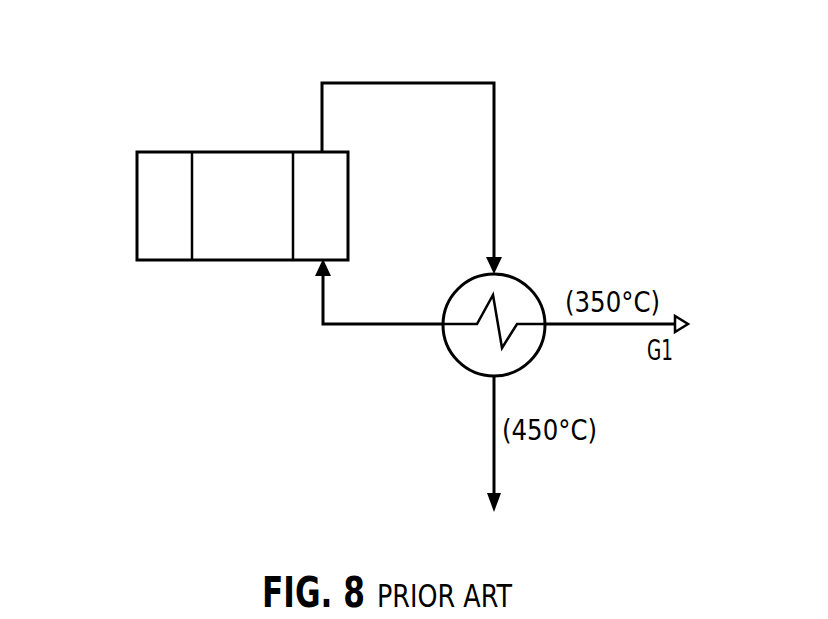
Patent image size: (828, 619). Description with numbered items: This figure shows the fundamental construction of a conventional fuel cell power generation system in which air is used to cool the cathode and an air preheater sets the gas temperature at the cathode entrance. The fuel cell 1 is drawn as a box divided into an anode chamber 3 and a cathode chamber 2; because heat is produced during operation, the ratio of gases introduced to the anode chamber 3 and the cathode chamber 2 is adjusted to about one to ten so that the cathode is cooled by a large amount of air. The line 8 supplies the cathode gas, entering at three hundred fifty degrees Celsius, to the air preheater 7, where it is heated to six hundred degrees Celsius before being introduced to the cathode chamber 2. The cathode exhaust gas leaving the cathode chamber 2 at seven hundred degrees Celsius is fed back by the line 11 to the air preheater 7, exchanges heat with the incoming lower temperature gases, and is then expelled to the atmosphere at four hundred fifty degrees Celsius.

The fuel cell 1 is at (214, 143).
The cathode chamber 2 is at (312, 157).
The anode chamber 3 is at (155, 203).
The air preheater 7 is at (531, 287).
The line 8 is at (371, 326).
The line 11 is at (435, 83).